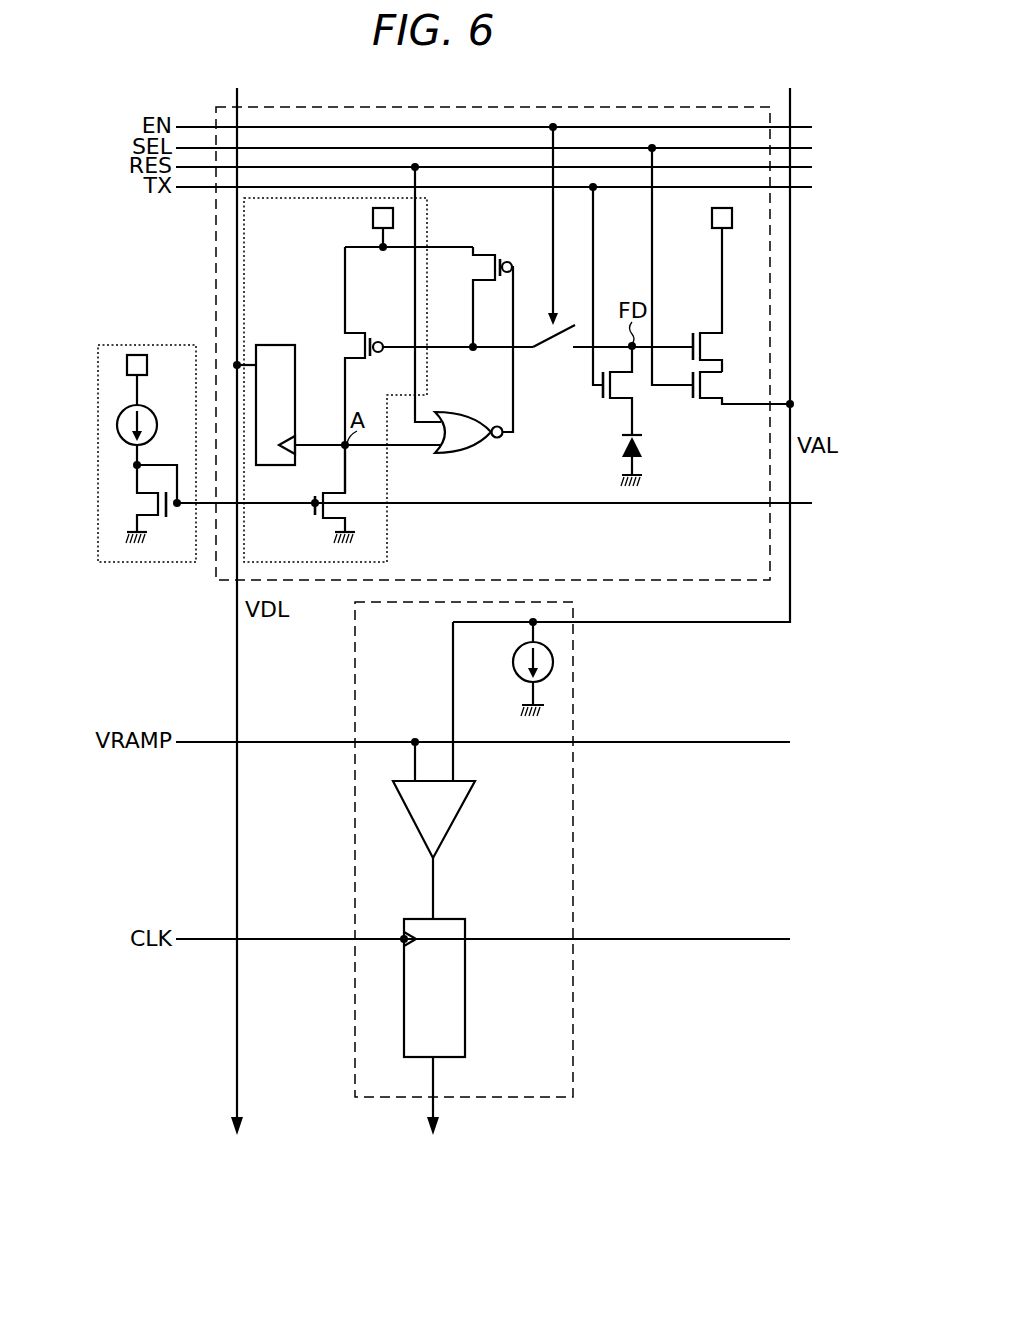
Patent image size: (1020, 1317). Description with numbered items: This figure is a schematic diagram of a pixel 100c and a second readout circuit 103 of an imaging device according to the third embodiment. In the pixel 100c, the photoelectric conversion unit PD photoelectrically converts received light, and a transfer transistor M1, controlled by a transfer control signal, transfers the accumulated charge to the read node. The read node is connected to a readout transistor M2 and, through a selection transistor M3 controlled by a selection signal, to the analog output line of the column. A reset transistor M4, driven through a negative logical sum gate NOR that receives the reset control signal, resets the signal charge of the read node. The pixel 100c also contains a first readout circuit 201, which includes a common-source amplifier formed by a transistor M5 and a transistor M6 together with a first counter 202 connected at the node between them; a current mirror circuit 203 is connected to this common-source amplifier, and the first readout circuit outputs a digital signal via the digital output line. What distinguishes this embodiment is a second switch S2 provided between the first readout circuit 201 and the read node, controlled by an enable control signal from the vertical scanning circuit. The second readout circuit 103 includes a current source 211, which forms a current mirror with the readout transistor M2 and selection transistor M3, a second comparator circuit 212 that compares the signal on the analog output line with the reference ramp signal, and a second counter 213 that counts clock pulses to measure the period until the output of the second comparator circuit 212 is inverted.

The pixel 100c is at (771, 557).
The second readout circuit 103 is at (573, 1064).
The first readout circuit 201 is at (388, 549).
The first counter 202 is at (275, 344).
The current mirror circuit 203 is at (96, 390).
The current source 211 is at (553, 663).
The second comparator circuit 212 is at (448, 836).
The second counter 213 is at (465, 994).
The transfer transistor M1 is at (628, 388).
The readout transistor M2 is at (706, 346).
The selection transistor M3 is at (706, 384).
The reset transistor M4 is at (482, 270).
The transistor M5 is at (348, 347).
The transistor M6 is at (340, 498).
The second switch S2 is at (558, 357).
The photoelectric conversion unit PD is at (645, 447).
The negative logical sum gate NOR is at (474, 456).